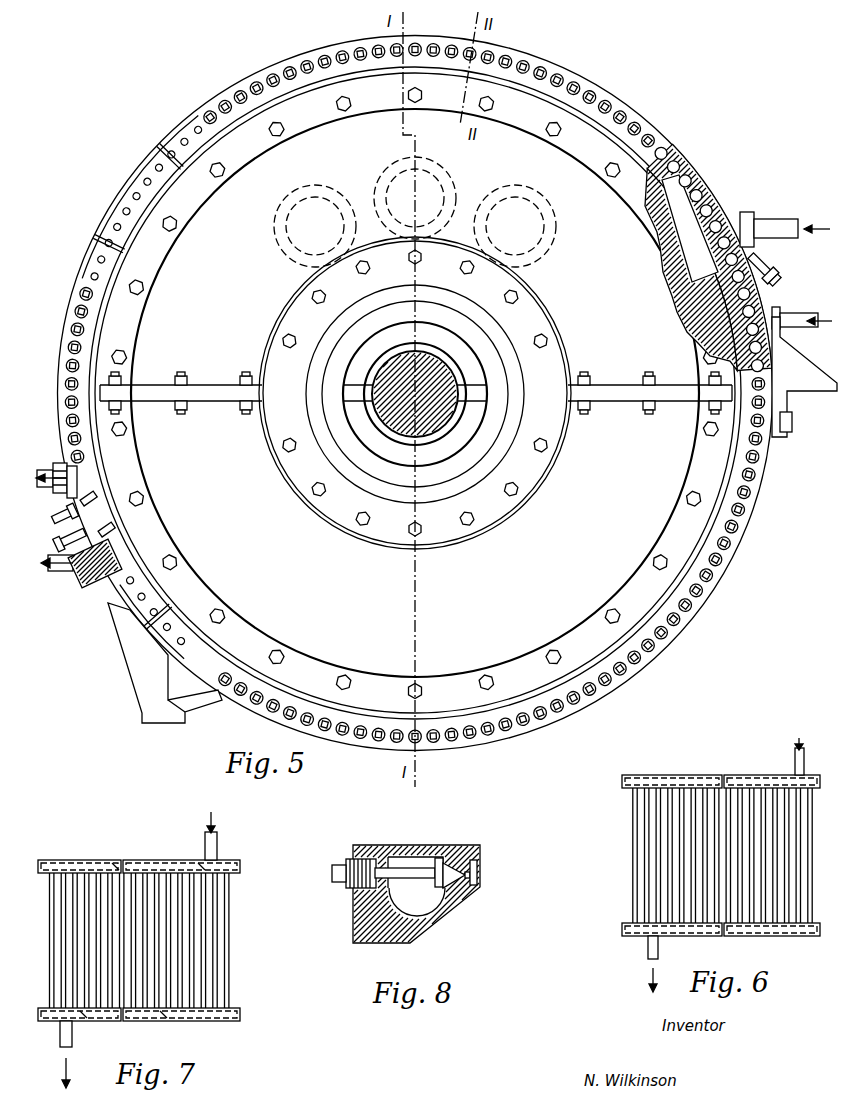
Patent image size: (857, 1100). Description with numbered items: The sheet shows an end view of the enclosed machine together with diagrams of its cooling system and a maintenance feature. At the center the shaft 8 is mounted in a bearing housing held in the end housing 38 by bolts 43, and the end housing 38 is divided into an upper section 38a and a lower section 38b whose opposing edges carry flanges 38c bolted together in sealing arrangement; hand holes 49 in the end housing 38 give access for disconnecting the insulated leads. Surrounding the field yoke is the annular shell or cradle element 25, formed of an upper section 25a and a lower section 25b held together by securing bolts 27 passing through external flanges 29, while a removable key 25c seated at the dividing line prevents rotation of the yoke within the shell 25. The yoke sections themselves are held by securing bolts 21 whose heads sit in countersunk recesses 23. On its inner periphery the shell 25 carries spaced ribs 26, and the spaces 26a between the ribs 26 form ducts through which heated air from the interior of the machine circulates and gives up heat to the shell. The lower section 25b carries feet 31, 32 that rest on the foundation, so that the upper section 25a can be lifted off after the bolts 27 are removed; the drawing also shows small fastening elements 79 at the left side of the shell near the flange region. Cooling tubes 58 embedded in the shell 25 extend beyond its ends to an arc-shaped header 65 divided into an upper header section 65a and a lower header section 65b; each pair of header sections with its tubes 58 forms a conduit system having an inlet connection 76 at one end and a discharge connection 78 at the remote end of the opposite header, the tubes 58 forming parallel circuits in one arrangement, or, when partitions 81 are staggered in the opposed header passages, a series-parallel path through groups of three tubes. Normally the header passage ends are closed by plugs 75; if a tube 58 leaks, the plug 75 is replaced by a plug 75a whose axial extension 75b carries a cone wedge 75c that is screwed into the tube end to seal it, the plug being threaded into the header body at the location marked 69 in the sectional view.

In FIG. 5, the shaft 8 is at (423, 437).
In FIG. 5, the securing bolts 21 is at (682, 292).
In FIG. 5, the countersunk recesses 23 is at (690, 250).
In FIG. 5, the annular shell or cradle element 25 is at (676, 170).
In FIG. 5, the upper shell section 25a is at (748, 232).
In FIG. 5, the lower shell section 25b is at (763, 311).
In FIG. 5, the key 25c is at (700, 318).
In FIG. 5, the ribs 26 is at (702, 198).
In FIG. 5, the spaces or ducts between ribs 26a is at (668, 232).
In FIG. 5, the securing bolts 27 is at (778, 290).
In FIG. 5, the external flanges 29 is at (772, 276).
In FIG. 5, the pedestal or foot 31 is at (814, 392).
In FIG. 5, the pedestal or foot 32 is at (152, 723).
In FIG. 5, the end housing 38 is at (232, 250).
In FIG. 5, the upper end housing section 38a is at (596, 330).
In FIG. 5, the lower end housing section 38b is at (586, 508).
In FIG. 5, the flanges 38c is at (222, 385).
In FIG. 5, the bolts 43 is at (539, 340).
In FIG. 5, the hand holes 49 is at (292, 256).
In FIG. 6, the tubes 58 is at (634, 852).
In FIG. 7, the tubes 58 is at (228, 926).
In FIG. 8, the tubes 58 is at (481, 890).
In FIG. 5, the header 65 is at (270, 80).
In FIG. 6, the upper header section 65a is at (707, 775).
In FIG. 8, the upper header section 65a is at (356, 928).
In FIG. 7, the lower header section 65b is at (75, 860).
In FIG. 8, the passage 69 is at (381, 848).
In FIG. 5, the closure plugs 75 is at (534, 72).
In FIG. 8, the emergency closure plug 75a is at (348, 888).
In FIG. 8, the axial extension 75b is at (410, 880).
In FIG. 8, the cone wedge or plug 75c is at (438, 858).
In FIG. 5, the inlet connection 76 is at (756, 223).
In FIG. 6, the inlet connection 76 is at (804, 765).
In FIG. 7, the inlet connection 76 is at (216, 848).
In FIG. 5, the discharge connection 78 is at (60, 468).
In FIG. 6, the discharge connection 78 is at (649, 950).
In FIG. 7, the discharge connection 78 is at (71, 1046).
In FIG. 5, the bolts 79 is at (98, 498).
In FIG. 5, the partitions or barriers 81 is at (161, 150).
In FIG. 7, the partitions or barriers 81 is at (115, 865).